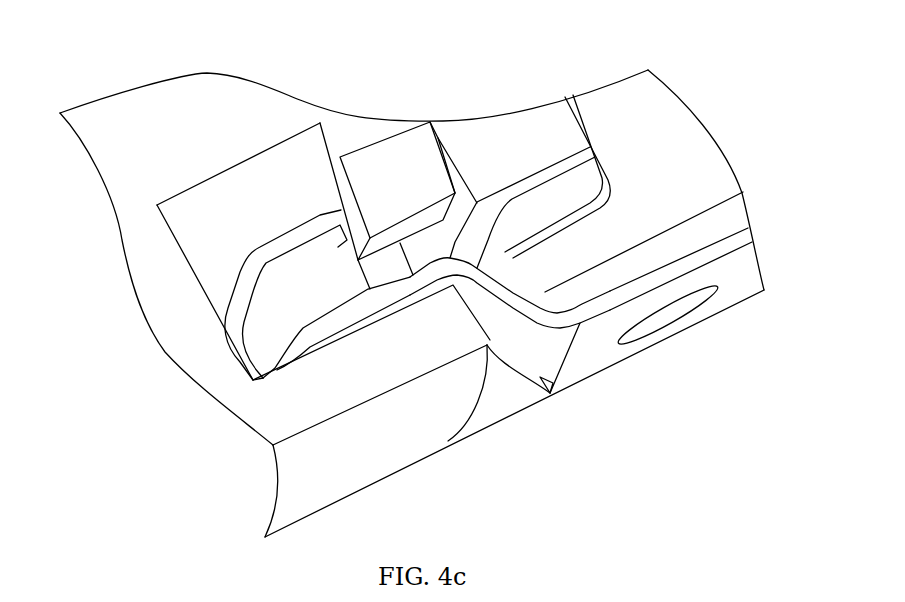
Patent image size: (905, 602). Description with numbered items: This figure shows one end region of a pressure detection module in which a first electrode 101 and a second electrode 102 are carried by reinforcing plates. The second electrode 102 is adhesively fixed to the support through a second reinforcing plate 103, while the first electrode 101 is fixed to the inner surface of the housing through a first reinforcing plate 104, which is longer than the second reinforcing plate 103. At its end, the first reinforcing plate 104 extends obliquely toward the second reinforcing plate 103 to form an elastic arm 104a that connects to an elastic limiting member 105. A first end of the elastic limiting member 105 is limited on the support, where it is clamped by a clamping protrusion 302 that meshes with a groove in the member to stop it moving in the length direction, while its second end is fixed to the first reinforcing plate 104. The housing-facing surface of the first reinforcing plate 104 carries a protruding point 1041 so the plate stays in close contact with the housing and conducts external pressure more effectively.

The first electrode 101 is at (630, 268).
The second electrode 102 is at (522, 238).
The second reinforcing plate 103 is at (505, 228).
The first reinforcing plate 104 is at (735, 288).
The elastic arm 104a is at (495, 335).
The protruding point 1041 is at (655, 327).
The elastic limiting member 105 is at (235, 295).
The clamping protrusion 302 is at (407, 140).